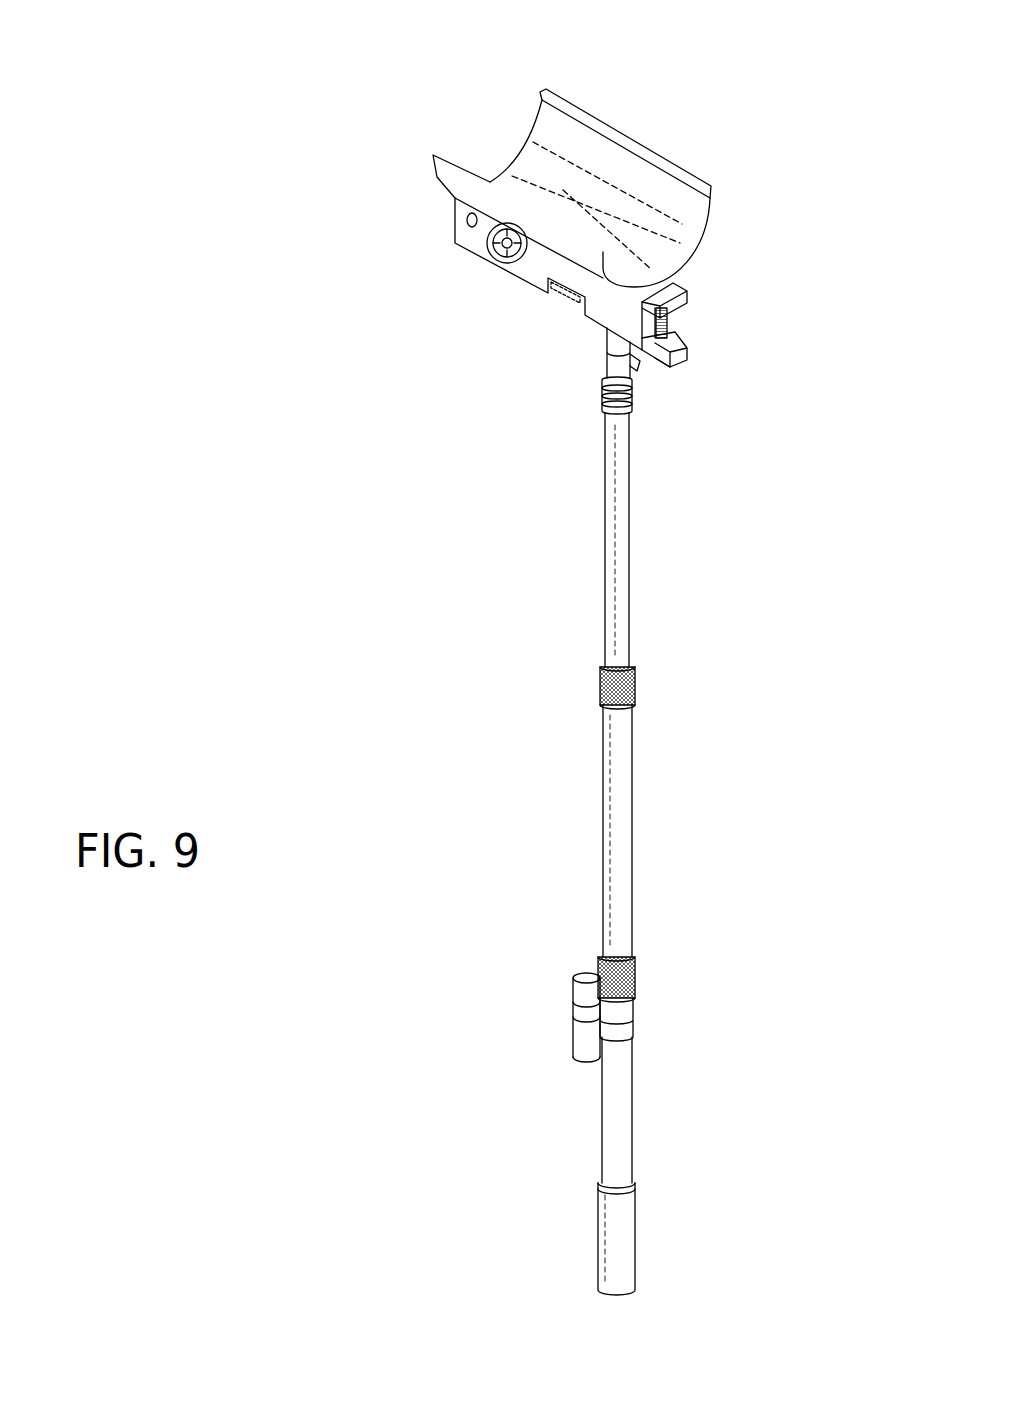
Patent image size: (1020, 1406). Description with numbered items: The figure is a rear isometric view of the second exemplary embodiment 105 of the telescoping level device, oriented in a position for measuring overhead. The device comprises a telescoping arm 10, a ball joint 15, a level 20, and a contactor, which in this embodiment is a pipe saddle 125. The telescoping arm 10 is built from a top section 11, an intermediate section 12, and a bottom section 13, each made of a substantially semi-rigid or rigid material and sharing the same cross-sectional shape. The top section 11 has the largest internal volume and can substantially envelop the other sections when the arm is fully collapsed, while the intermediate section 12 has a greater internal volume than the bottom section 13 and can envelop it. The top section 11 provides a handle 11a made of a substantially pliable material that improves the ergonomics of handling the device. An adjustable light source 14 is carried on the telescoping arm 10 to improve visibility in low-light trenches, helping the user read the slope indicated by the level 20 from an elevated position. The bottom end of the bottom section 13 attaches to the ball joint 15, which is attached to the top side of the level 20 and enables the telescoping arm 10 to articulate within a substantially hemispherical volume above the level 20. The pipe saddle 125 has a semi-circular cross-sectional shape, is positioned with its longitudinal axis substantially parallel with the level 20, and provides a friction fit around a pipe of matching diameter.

The second exemplary embodiment 105 is at (343, 104).
The pipe saddle 125 is at (568, 117).
The level 20 is at (477, 245).
The ball joint 15 is at (604, 371).
The telescoping arm 10 is at (640, 1290).
The bottom section 13 is at (603, 546).
The intermediate section 12 is at (603, 810).
The adjustable light source 14 is at (578, 1040).
The top section 11 is at (607, 1145).
The handle 11a is at (607, 1237).